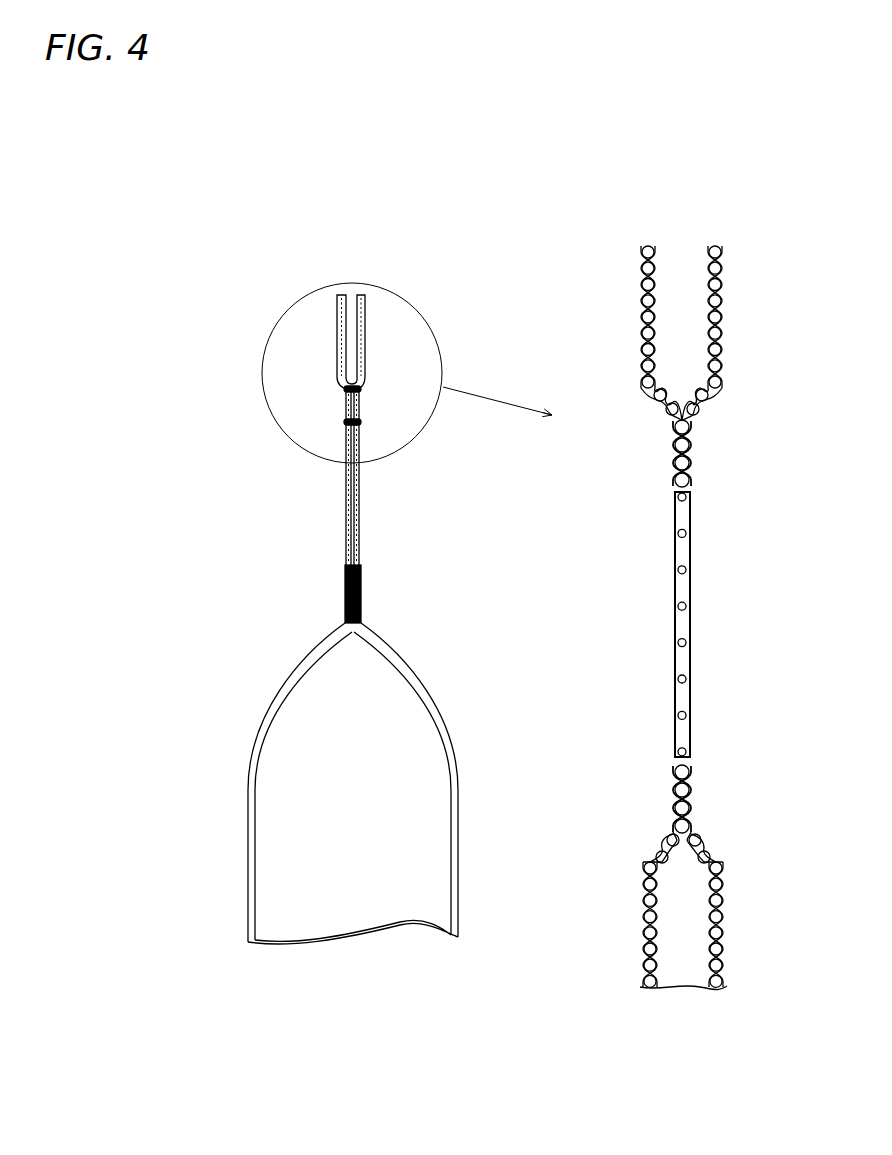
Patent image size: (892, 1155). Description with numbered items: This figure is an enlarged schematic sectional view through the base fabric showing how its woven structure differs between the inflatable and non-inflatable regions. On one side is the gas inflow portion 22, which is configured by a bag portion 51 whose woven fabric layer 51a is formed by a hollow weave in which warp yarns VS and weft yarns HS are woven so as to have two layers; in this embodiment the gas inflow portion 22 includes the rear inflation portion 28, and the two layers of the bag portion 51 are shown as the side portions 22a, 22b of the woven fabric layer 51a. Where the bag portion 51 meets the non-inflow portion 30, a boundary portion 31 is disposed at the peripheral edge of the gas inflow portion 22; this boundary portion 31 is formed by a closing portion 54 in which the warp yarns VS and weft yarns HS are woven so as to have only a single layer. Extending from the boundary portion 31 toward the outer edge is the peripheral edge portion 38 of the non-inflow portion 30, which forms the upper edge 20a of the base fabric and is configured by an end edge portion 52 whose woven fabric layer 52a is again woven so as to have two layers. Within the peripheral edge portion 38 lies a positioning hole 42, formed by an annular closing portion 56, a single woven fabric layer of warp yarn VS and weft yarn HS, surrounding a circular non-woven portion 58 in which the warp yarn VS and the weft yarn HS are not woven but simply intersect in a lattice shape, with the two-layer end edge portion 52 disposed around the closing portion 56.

The upper edge 20a is at (302, 315).
The peripheral edge portion 38 is at (524, 657).
The non-inflow portion 30 is at (524, 657).
The non-woven portion 58 is at (459, 552).
The closing portion 56 is at (376, 395).
The positioning hole 42 is at (615, 575).
The boundary portion 31 is at (419, 591).
The closing portion 54 is at (363, 593).
The bag portion 51 is at (466, 694).
The rear inflation portion 28 is at (367, 783).
The gas inflow portion 22 is at (367, 783).
The first side portion 22a is at (458, 825).
The second side portion 22b is at (248, 822).
The woven fabric layer 51a is at (365, 866).
The end edge portion 52 is at (638, 668).
The woven fabric layer 52a is at (623, 319).
The weft yarn HS is at (653, 243).
The warp yarn VS is at (642, 250).